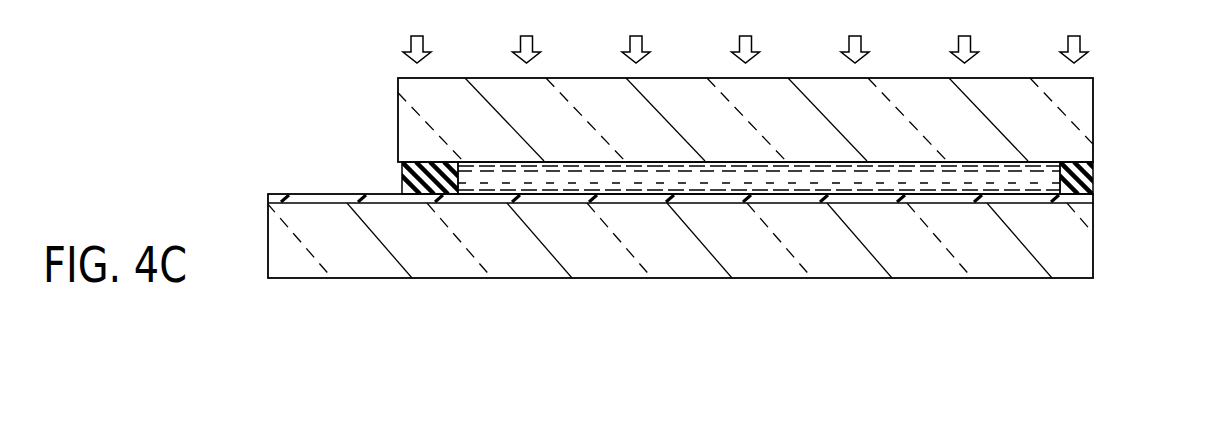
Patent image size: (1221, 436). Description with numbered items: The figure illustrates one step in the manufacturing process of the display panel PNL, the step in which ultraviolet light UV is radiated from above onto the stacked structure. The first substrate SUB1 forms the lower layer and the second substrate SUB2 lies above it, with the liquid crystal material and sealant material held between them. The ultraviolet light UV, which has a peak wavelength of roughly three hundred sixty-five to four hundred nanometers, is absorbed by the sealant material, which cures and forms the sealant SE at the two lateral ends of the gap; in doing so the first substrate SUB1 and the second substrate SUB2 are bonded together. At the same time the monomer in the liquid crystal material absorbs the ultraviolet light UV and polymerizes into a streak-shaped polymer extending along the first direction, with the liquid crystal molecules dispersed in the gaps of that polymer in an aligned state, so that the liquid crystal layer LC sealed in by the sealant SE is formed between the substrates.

The ultraviolet light UV is at (745, 32).
The second substrate SUB2 is at (1096, 118).
The first substrate SUB1 is at (1096, 237).
The liquid crystal layer LC is at (873, 180).
The sealant SE is at (406, 174).
The display panel PNL is at (733, 280).